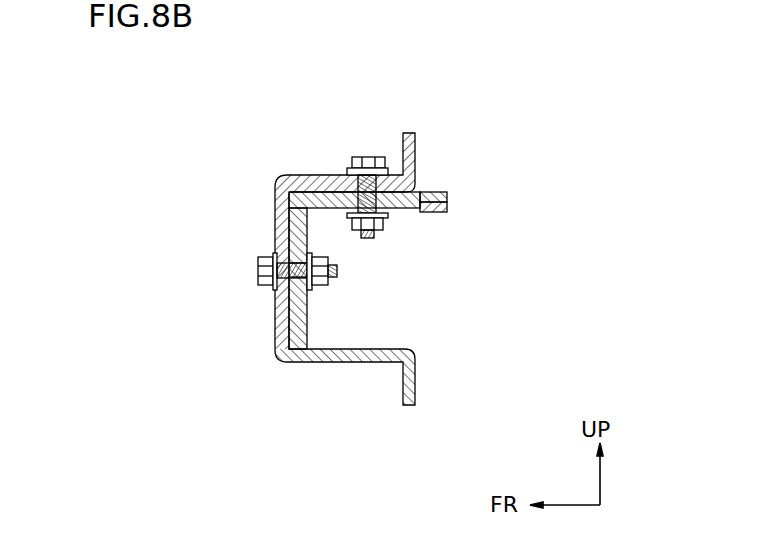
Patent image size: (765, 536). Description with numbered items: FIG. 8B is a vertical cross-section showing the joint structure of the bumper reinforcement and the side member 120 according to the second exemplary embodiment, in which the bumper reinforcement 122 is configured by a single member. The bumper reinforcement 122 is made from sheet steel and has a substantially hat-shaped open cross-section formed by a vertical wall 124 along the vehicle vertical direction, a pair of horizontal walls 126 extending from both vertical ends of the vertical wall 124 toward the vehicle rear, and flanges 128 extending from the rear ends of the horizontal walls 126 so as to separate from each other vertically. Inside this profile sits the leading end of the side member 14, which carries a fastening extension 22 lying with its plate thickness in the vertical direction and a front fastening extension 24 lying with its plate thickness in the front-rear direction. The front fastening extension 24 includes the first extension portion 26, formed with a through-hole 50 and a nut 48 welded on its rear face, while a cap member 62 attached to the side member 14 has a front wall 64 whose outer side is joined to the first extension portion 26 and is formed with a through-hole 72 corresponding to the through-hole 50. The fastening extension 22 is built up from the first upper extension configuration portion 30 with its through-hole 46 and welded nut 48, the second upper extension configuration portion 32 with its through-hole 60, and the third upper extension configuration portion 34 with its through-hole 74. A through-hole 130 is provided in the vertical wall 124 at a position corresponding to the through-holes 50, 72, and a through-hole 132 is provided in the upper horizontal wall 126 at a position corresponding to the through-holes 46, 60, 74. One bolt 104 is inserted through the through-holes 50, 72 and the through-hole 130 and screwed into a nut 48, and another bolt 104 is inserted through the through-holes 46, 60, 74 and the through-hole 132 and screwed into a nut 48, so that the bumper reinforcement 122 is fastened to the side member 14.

The side member 14 is at (419, 196).
The fastening extension 22 is at (419, 196).
The front fastening extension 24 is at (310, 267).
The first extension portion 26 is at (308, 337).
The first upper extension configuration portion 30 is at (410, 215).
The second upper extension configuration portion 32 is at (425, 194).
The third upper extension configuration portion 34 is at (410, 194).
The through-hole 46 is at (415, 214).
The nut 48 is at (317, 257).
The through-hole 50 is at (369, 226).
The through-hole 60 is at (388, 226).
The cap member 62 is at (305, 312).
The front wall 64 is at (297, 242).
The through-hole 72 is at (305, 297).
The through-hole 74 is at (347, 170).
The bolt 104 is at (325, 179).
The joint structure of the bumper reinforcement and the side member 120 is at (350, 219).
The bumper reinforcement 122 is at (350, 219).
The vertical wall 124 is at (277, 315).
The horizontal wall 126 is at (298, 173).
The flange 128 is at (415, 145).
The through-hole 130 is at (260, 258).
The through-hole 132 is at (372, 157).